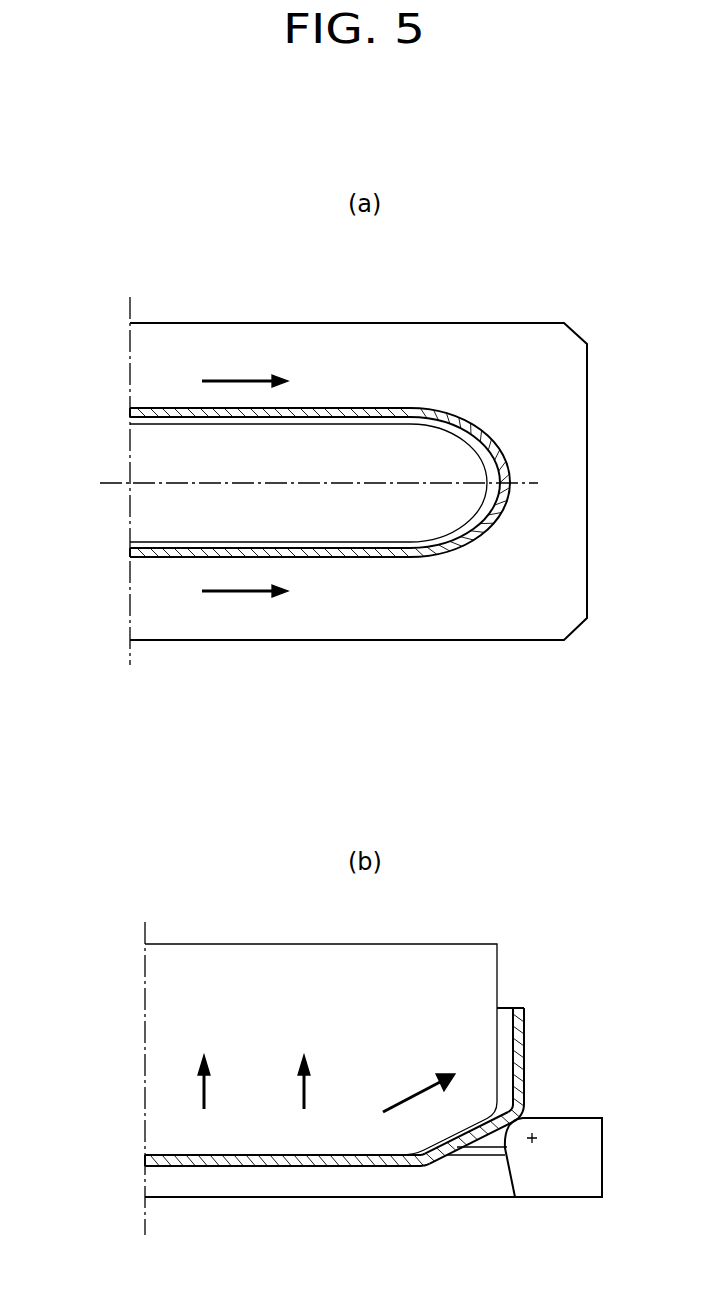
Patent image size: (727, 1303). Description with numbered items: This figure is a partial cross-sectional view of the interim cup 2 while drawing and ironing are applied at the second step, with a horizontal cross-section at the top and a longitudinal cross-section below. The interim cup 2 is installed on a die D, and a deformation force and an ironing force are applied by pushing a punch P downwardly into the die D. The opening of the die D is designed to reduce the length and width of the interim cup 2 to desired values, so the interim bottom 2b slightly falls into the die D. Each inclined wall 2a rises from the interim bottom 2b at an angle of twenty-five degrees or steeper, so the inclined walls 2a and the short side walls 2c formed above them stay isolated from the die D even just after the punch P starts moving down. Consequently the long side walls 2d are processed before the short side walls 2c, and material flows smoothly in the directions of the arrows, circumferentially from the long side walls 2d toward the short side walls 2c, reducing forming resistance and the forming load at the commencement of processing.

The interim cup 2 is at (357, 758).
The inclined wall 2a is at (500, 1156).
The interim bottom 2b is at (321, 1167).
The short side wall 2c is at (509, 484).
The long side wall 2d is at (172, 405).
The die D is at (342, 357).
The punch P is at (147, 455).